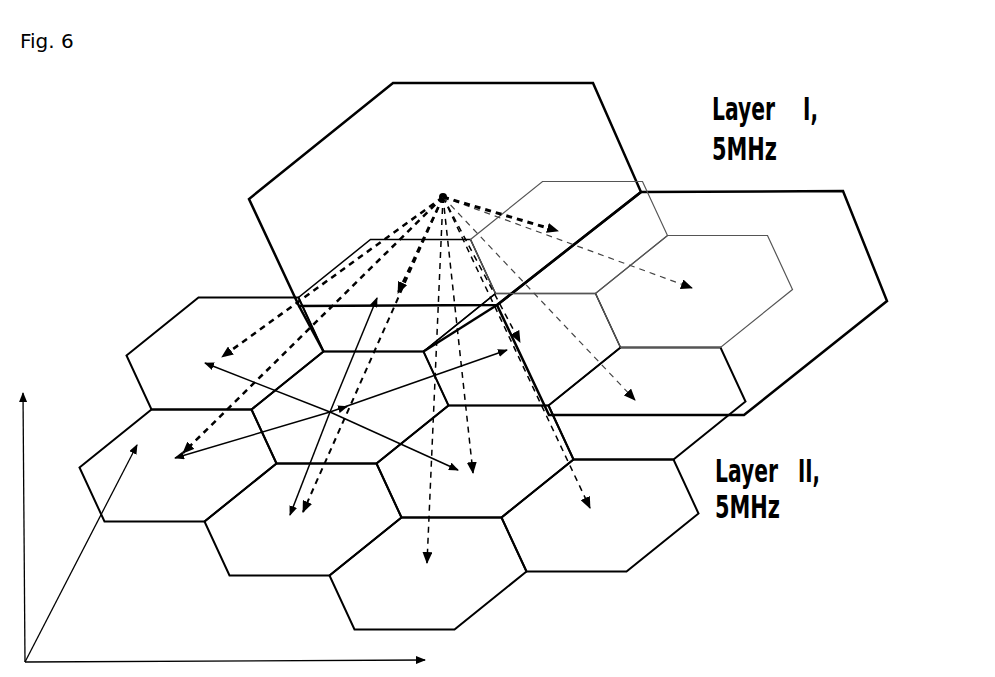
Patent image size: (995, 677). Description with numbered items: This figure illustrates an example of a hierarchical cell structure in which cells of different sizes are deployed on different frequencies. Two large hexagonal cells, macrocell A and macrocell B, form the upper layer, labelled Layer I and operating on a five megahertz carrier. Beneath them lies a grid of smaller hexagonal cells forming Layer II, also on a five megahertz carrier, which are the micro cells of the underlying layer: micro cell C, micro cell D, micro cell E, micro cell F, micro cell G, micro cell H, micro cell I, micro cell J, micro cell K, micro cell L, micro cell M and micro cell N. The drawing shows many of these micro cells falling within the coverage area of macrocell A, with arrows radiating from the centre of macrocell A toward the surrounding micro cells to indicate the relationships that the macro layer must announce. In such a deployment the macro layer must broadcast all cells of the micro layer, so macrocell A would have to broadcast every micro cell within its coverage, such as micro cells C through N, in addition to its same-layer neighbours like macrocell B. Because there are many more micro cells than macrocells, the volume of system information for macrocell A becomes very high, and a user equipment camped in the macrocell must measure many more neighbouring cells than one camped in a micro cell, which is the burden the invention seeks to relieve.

The macrocell A is at (445, 217).
The macrocell B is at (692, 303).
The micro cell C is at (178, 466).
The micro cell D is at (303, 520).
The micro cell E is at (350, 408).
The micro cell F is at (397, 296).
The micro cell G is at (522, 350).
The micro cell H is at (475, 462).
The micro cell I is at (428, 574).
The micro cell J is at (600, 516).
The micro cell K is at (647, 404).
The micro cell L is at (694, 292).
The micro cell M is at (569, 238).
The micro cell N is at (225, 354).